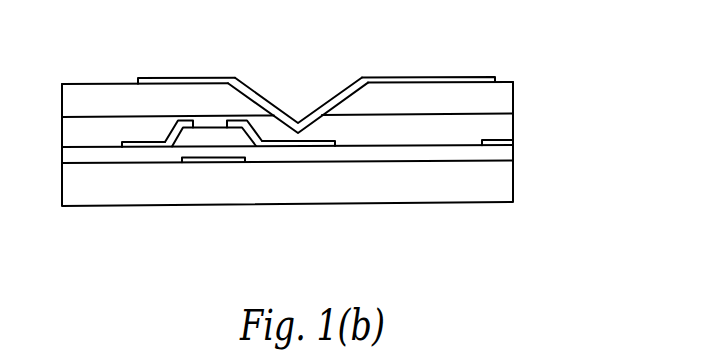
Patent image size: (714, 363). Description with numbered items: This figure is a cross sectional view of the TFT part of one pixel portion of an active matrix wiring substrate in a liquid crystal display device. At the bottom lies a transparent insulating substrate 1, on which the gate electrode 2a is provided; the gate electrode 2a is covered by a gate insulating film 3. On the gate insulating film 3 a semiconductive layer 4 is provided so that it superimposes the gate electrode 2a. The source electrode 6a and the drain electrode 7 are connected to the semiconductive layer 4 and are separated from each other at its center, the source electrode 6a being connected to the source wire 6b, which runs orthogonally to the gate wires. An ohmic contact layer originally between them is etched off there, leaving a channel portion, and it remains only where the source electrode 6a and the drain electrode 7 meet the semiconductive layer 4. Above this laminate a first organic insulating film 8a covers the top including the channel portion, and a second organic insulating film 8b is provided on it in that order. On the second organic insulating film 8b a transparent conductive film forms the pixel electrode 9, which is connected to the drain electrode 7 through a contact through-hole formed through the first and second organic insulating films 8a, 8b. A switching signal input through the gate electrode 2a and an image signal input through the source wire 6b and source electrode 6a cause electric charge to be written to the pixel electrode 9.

The transparent insulating substrate 1 is at (499, 185).
The gate electrode 2a is at (222, 166).
The gate insulating film 3 is at (506, 152).
The semiconductive layer 4 is at (212, 123).
The source electrode 6a is at (147, 154).
The source wire 6b is at (521, 140).
The drain electrode 7 is at (282, 153).
The first organic insulating film 8a is at (505, 127).
The second organic insulating film 8b is at (468, 96).
The pixel electrode 9 is at (351, 81).